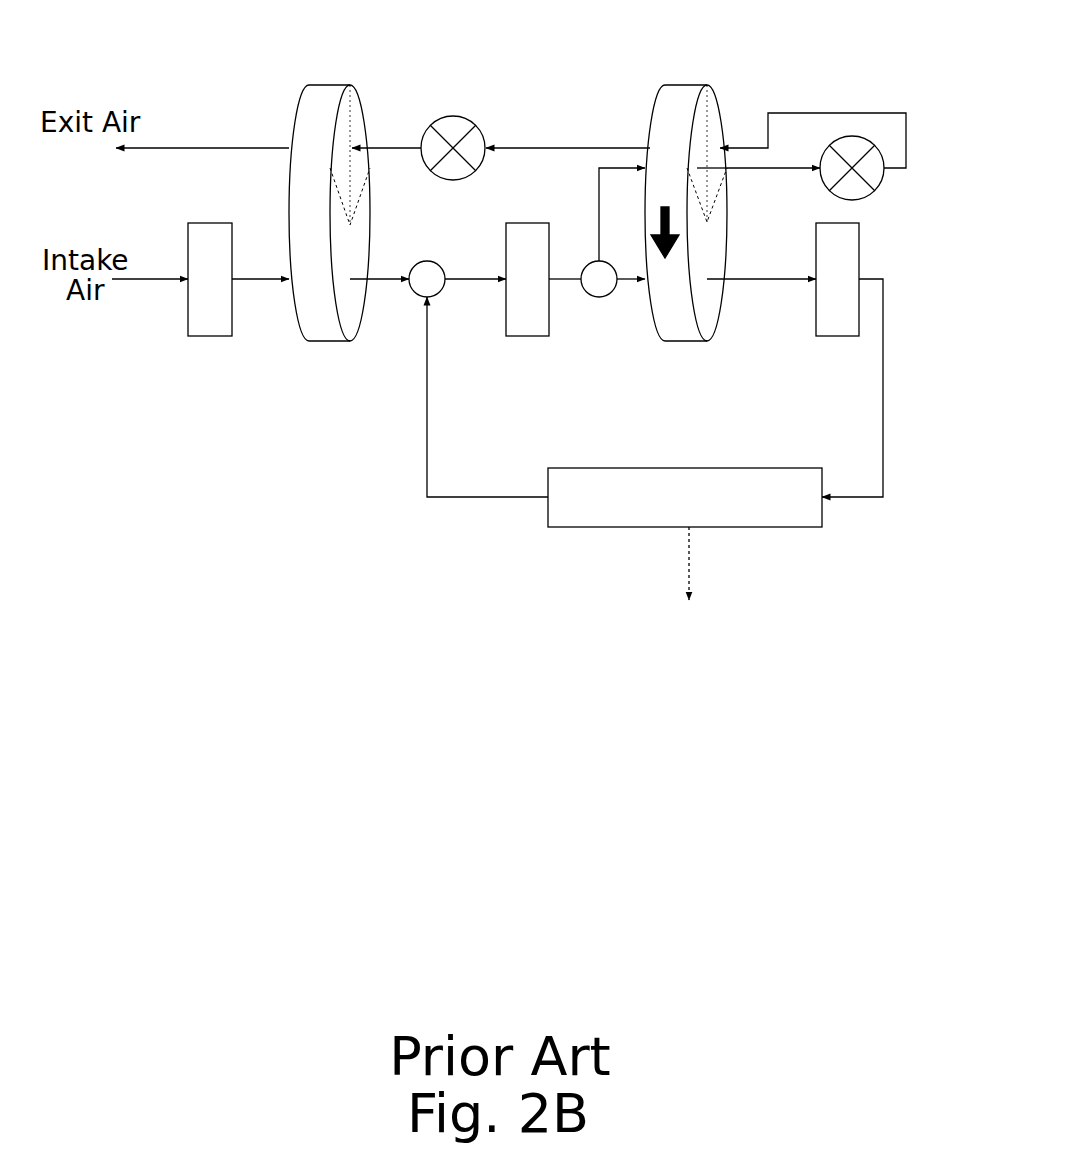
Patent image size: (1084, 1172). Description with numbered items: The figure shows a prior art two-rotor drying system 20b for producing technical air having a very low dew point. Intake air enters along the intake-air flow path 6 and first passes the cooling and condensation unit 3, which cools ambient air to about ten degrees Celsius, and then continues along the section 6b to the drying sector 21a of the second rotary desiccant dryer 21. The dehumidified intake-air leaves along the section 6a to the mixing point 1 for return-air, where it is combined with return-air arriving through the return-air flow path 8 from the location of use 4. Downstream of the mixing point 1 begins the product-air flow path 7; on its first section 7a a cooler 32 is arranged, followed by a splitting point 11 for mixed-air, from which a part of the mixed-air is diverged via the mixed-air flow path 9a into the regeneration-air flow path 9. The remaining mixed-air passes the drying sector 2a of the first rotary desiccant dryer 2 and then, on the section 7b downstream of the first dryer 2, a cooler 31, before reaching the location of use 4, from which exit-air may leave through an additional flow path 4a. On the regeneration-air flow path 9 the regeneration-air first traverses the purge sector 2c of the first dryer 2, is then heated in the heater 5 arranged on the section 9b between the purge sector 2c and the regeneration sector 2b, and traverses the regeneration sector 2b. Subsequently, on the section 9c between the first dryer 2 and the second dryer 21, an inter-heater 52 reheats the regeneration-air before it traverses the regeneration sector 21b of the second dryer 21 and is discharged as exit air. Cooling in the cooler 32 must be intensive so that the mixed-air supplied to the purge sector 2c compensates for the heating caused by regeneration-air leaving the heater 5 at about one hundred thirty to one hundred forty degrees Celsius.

The mixing point for return-air 1 is at (423, 262).
The first rotary desiccant dryer 2 is at (697, 184).
The drying sector of the first rotary desiccant dryer 2a is at (712, 258).
The regeneration sector of the first dryer 2b is at (720, 137).
The purge sector of the first dryer 2c is at (702, 108).
The cooling and condensation unit 3 is at (212, 338).
The location of use 4 is at (826, 510).
The flow path for exit-air 4a is at (698, 556).
The heater 5 is at (884, 185).
The intake-air flow path 6 is at (153, 286).
The intake-air flow path section downstream of the second dryer 6a is at (380, 287).
The intake-air flow path section between the cooling unit and the second dryer 6b is at (250, 287).
The product-air flow path 7 is at (880, 433).
The first section of the product-air flow path 7a is at (478, 285).
The product-air flow path section downstream of the first dryer 7b is at (756, 285).
The return-air flow path 8 is at (432, 478).
The regeneration-air flow path 9 is at (225, 145).
The mixed-air flow path 9a is at (597, 246).
The regeneration-air flow path section between purge sector and regeneration sector 9b is at (840, 113).
The regeneration-air flow path section between the first and second dryer 9c is at (537, 148).
The splitting point for mixed-air 11 is at (612, 298).
The 2-rotor drying system 20b is at (312, 503).
The second rotary desiccant dryer 21 is at (319, 215).
The drying sector of the second rotary desiccant dryer 21a is at (356, 303).
The regeneration sector of the second dryer 21b is at (352, 127).
The cooler 31 is at (862, 245).
The cooler 32 is at (503, 263).
The inter-heater 52 is at (475, 128).